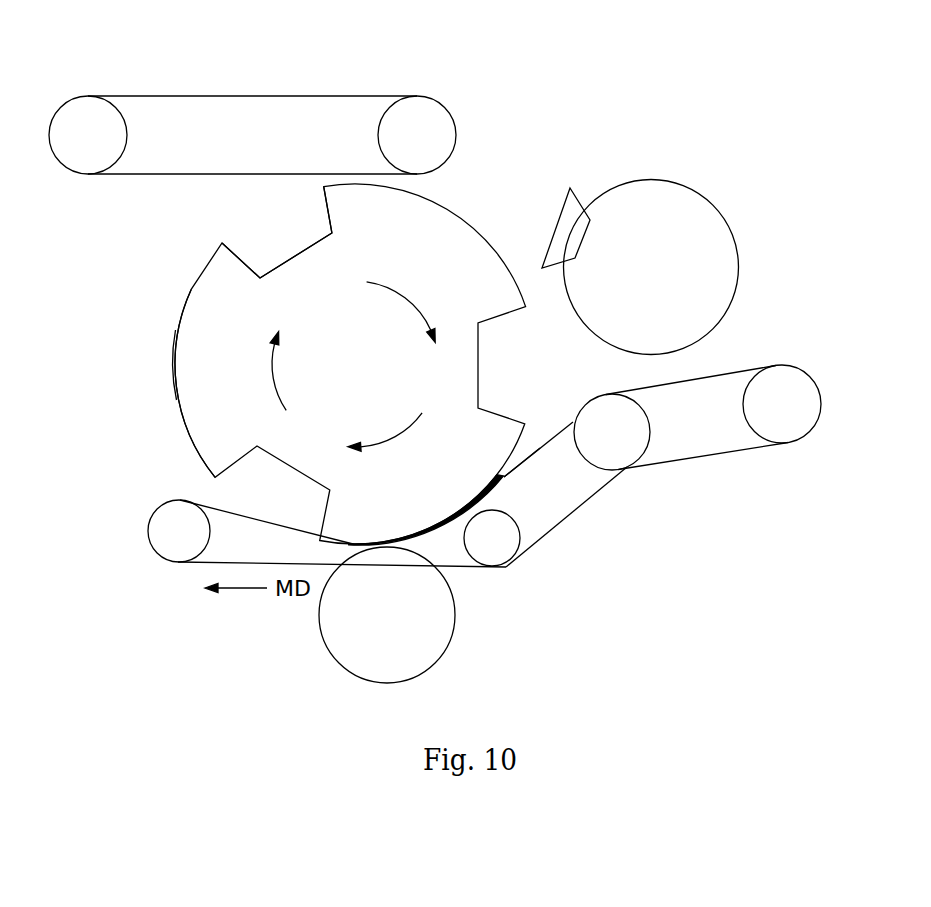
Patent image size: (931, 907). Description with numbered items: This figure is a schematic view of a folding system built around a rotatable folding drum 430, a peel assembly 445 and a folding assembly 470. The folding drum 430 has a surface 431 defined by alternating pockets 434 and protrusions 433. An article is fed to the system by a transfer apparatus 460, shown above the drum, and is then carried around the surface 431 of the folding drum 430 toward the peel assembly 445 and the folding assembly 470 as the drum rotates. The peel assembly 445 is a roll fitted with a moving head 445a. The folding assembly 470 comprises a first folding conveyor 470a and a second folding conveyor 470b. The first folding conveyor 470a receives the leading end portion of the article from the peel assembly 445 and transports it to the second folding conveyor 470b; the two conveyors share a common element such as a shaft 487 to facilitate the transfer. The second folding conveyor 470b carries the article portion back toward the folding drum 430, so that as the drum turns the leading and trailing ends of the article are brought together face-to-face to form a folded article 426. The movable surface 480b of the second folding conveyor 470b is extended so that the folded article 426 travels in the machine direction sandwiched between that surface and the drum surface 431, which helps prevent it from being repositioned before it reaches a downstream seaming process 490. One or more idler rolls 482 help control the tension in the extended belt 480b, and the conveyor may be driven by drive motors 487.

The transfer apparatus 460 is at (252, 97).
The rotatable folding drum 430 is at (372, 364).
The pockets 434 is at (309, 245).
The surface 431 is at (193, 290).
The protrusions 433 is at (170, 373).
The peel assembly 445 is at (712, 180).
The moving head 445a is at (582, 207).
The folded article 426 is at (468, 505).
The shaft 487 is at (613, 418).
The folding assembly 470 is at (499, 476).
The first folding conveyor 470a is at (705, 438).
The second folding conveyor 470b is at (662, 490).
The movable surface 480b is at (520, 477).
The idler rolls 482 is at (495, 555).
The seaming process 490 is at (380, 672).